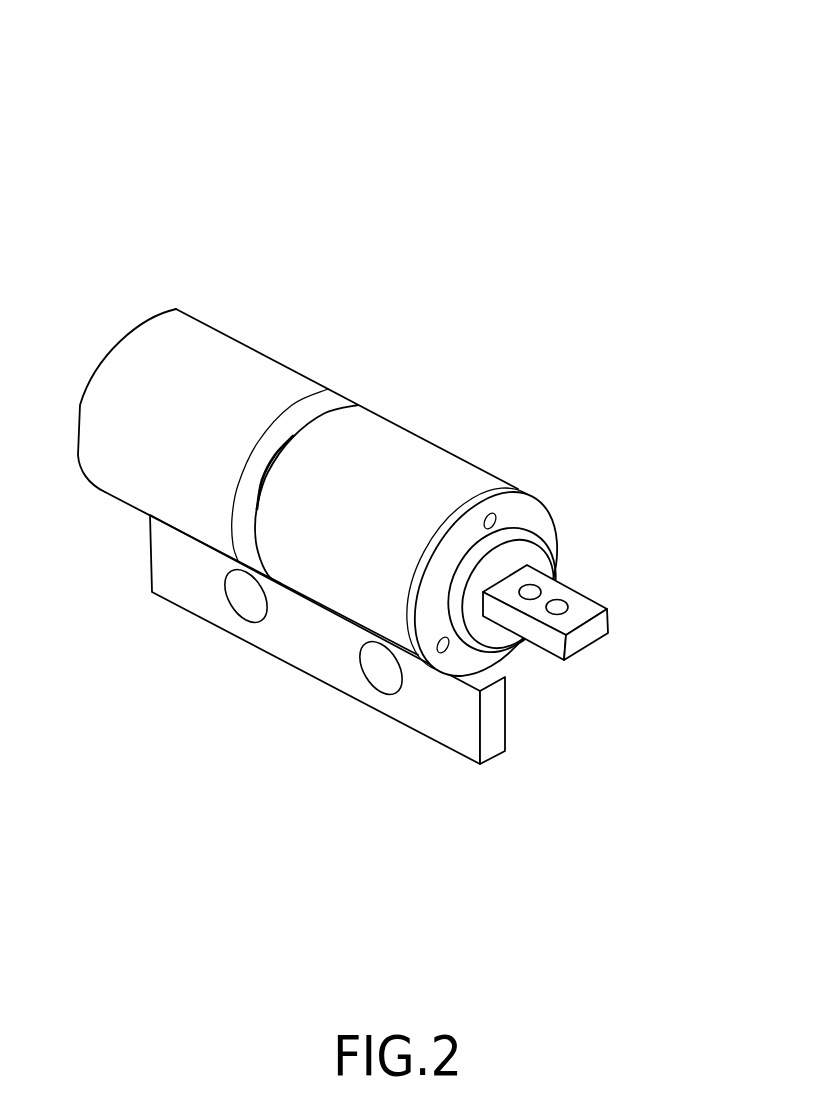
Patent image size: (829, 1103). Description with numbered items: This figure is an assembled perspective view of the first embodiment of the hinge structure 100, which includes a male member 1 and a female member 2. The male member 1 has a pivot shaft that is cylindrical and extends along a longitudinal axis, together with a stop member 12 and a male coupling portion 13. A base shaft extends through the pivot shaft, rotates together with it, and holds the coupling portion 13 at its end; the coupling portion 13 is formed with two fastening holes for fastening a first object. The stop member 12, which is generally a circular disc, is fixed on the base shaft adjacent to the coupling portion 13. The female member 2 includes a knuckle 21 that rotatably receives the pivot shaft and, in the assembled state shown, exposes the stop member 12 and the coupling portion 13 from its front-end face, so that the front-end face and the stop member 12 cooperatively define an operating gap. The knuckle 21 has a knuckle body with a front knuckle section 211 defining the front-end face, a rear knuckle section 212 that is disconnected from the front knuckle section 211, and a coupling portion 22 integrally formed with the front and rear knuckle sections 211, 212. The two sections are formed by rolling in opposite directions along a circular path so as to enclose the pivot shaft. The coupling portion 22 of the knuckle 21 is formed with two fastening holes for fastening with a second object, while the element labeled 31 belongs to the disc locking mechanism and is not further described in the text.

The hinge structure 100 is at (401, 402).
The male member 1 is at (551, 512).
The stop member 12 is at (538, 558).
The male coupling portion 13 is at (588, 633).
The bearing boss ring 31 is at (548, 533).
The female member 2 is at (298, 471).
The knuckle 21 is at (298, 421).
The front knuckle section 211 is at (415, 460).
The rear knuckle section 212 is at (161, 358).
The coupling portion 22 is at (313, 662).